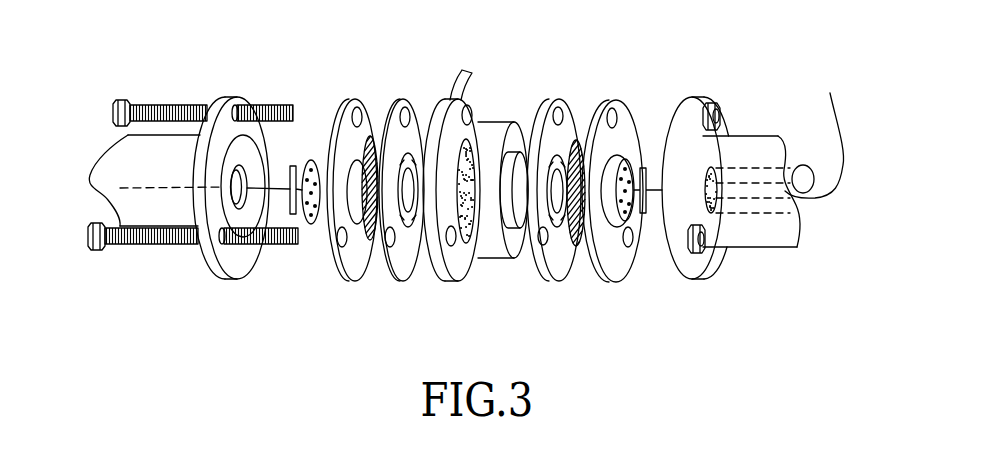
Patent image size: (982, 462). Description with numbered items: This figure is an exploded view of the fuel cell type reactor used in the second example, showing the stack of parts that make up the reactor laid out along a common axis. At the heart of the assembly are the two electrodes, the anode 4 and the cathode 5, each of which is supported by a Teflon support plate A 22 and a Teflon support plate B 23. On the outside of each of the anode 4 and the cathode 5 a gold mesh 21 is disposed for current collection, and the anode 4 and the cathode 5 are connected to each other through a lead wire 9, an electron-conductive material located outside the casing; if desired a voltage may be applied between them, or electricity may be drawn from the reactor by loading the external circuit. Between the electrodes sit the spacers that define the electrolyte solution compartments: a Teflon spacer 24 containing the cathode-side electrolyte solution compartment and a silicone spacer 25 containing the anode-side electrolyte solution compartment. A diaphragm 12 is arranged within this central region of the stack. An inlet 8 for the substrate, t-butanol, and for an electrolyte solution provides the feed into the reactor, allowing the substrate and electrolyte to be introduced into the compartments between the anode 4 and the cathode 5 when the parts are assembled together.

The anode 4 is at (577, 138).
The cathode 5 is at (367, 164).
The inlet for a substrate and an electrolyte solution 8 is at (461, 70).
The lead wire 9 is at (92, 143).
The diaphragm 12 is at (487, 108).
The gold mesh 21 is at (313, 225).
The Teflon support plate A 22 is at (352, 268).
The Teflon support plate B 23 is at (408, 270).
The Teflon spacer 24 is at (436, 104).
The silicone spacer 25 is at (525, 112).